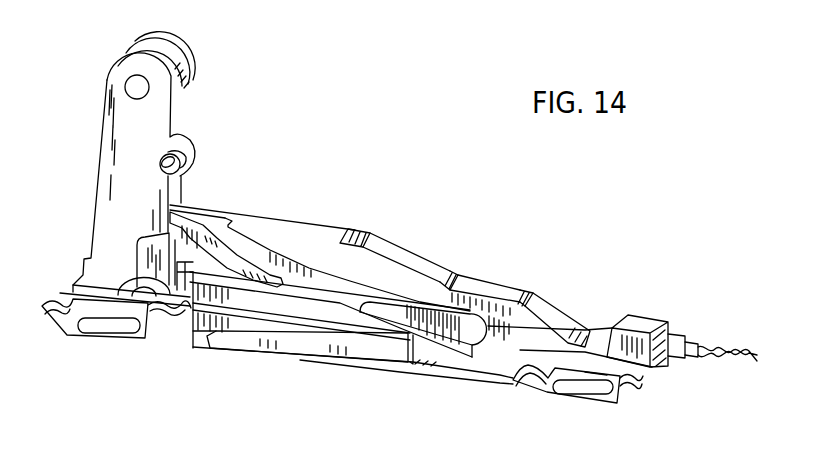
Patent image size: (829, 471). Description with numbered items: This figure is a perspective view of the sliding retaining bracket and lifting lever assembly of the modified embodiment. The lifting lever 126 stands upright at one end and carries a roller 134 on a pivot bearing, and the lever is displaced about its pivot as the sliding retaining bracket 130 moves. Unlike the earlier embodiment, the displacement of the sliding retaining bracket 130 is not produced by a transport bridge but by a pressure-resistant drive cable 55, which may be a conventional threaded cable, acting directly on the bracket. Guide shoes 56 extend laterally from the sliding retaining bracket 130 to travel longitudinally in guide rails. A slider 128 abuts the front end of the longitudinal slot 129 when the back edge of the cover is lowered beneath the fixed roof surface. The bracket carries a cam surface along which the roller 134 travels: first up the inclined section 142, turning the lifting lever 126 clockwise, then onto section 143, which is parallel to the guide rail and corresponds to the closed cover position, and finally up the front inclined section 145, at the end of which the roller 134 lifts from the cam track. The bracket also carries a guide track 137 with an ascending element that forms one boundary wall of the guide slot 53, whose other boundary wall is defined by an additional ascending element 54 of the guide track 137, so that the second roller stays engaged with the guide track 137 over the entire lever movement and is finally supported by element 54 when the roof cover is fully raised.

The lifting lever 126 is at (118, 224).
The roller 134 is at (178, 48).
The element of guide track 54 is at (193, 220).
The guide slot 53 is at (244, 248).
The sliding retaining bracket 130 is at (331, 250).
The front inclined section of cam surface 145 is at (405, 257).
The section of cam track 143 is at (485, 280).
The inclined section of cam surface 142 is at (553, 313).
The slider 128 is at (193, 327).
The guide track 137 is at (321, 282).
The longitudinal slot 129 is at (363, 305).
The drive cable 55 is at (731, 345).
The guide shoes 56 is at (580, 393).